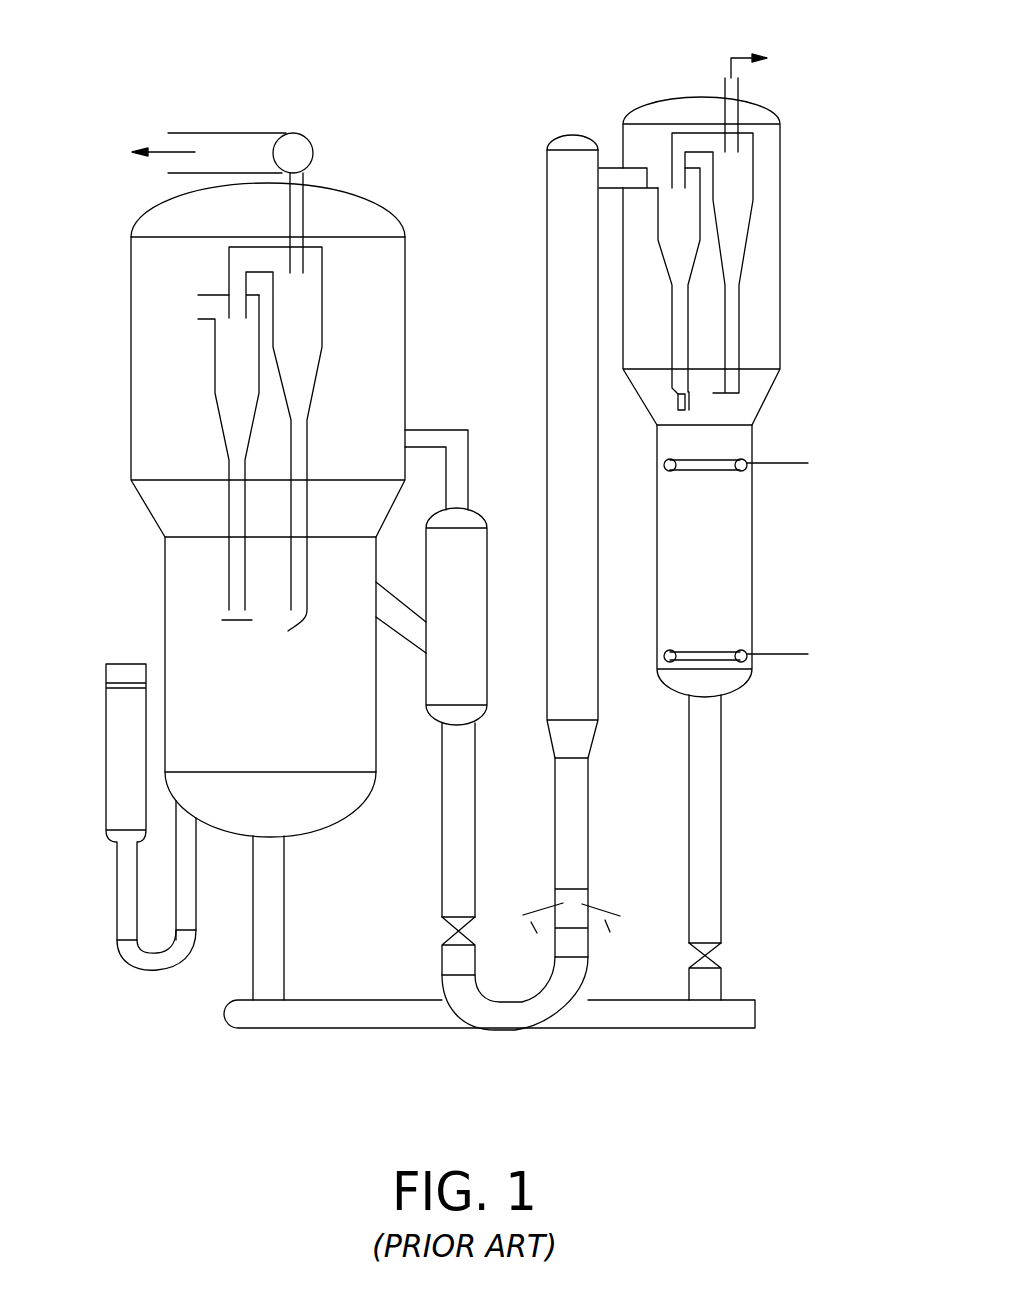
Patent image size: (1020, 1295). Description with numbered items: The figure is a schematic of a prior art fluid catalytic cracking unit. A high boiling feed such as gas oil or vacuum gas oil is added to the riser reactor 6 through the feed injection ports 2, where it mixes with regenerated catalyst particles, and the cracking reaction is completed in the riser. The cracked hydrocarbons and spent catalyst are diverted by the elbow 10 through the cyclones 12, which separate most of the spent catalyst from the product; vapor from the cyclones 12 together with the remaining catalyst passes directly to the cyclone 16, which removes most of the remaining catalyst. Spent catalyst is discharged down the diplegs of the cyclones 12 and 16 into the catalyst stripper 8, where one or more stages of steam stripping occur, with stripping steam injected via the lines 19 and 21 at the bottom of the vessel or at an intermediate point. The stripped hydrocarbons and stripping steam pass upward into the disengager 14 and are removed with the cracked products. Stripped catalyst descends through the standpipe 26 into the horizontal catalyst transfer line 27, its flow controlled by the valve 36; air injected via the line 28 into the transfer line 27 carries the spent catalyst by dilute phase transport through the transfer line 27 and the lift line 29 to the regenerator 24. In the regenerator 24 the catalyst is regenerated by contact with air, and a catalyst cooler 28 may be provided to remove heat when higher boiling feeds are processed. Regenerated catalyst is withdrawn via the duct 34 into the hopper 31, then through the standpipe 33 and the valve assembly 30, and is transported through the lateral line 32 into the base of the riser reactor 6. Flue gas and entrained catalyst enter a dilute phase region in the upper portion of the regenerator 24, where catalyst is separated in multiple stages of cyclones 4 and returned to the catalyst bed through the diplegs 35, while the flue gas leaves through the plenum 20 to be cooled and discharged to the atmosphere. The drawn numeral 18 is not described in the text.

The feed injection ports 2 is at (603, 913).
The cyclones 4 is at (237, 357).
The riser reactor 6 is at (575, 353).
The catalyst stripper 8 is at (705, 578).
The elbow 10 is at (553, 178).
The cyclones 12 is at (672, 230).
The disengager 14 is at (765, 272).
The cyclone 16 is at (745, 195).
The flue gas outlet 18 is at (723, 97).
The line 19 is at (781, 655).
The plenum 20 is at (300, 148).
The line 21 is at (781, 463).
The regenerator 24 is at (129, 376).
The standpipe 26 is at (708, 800).
The horizontal catalyst transfer line 27 is at (308, 1015).
The line 28 is at (130, 727).
The lift line 29 is at (268, 978).
The valve assembly 30 is at (442, 930).
The hopper 31 is at (470, 608).
The lateral line 32 is at (501, 1033).
The standpipe 33 is at (460, 846).
The duct 34 is at (398, 625).
The diplegs 35 is at (237, 517).
The valve 36 is at (710, 958).